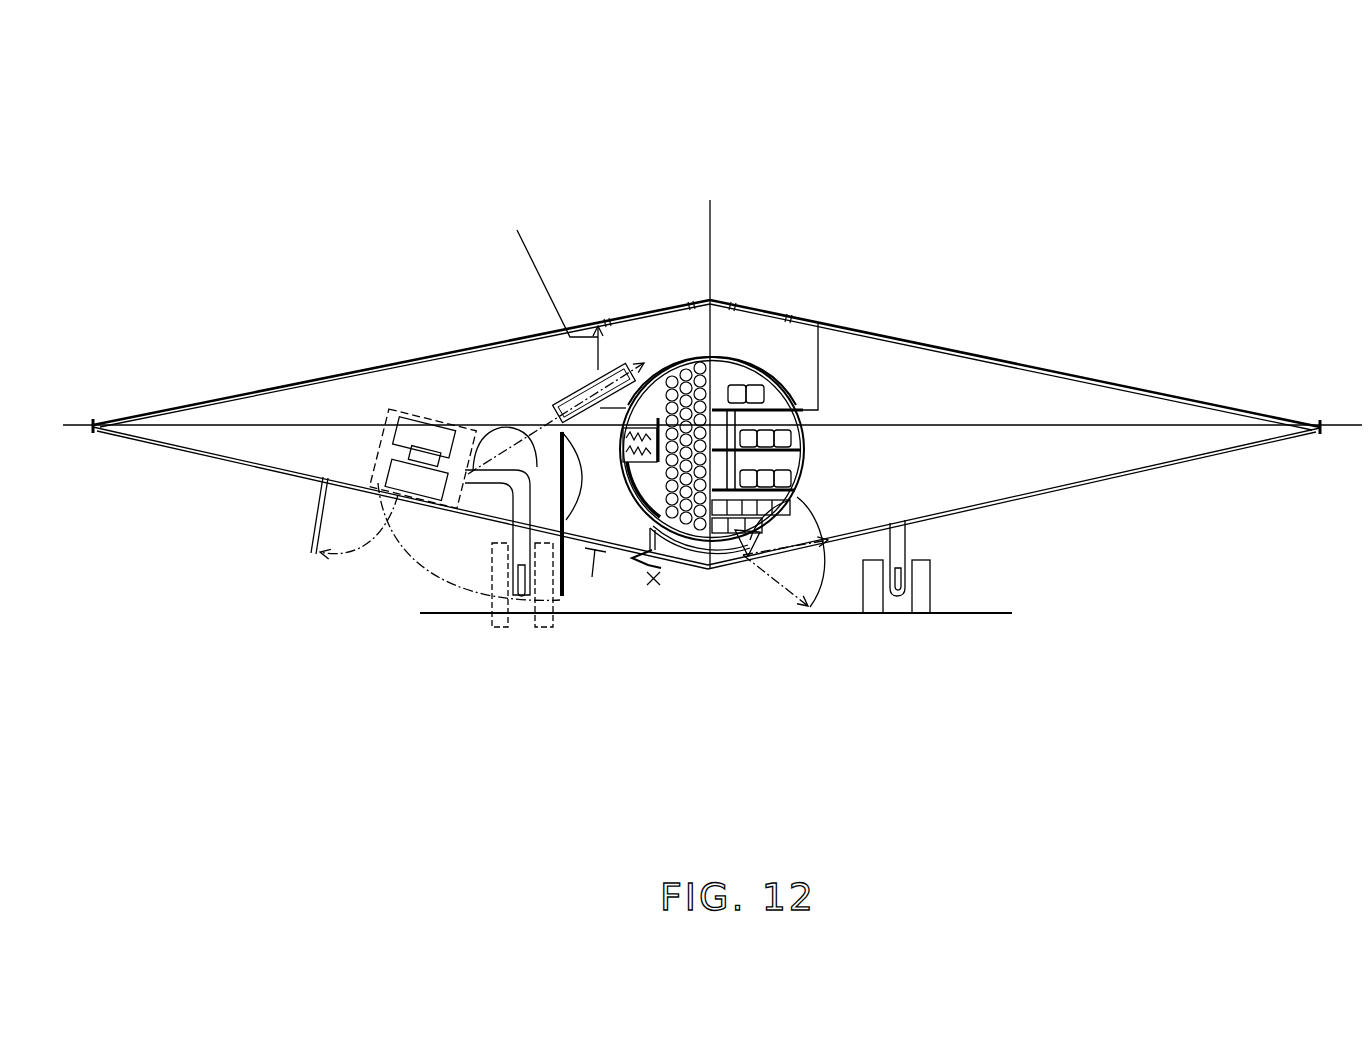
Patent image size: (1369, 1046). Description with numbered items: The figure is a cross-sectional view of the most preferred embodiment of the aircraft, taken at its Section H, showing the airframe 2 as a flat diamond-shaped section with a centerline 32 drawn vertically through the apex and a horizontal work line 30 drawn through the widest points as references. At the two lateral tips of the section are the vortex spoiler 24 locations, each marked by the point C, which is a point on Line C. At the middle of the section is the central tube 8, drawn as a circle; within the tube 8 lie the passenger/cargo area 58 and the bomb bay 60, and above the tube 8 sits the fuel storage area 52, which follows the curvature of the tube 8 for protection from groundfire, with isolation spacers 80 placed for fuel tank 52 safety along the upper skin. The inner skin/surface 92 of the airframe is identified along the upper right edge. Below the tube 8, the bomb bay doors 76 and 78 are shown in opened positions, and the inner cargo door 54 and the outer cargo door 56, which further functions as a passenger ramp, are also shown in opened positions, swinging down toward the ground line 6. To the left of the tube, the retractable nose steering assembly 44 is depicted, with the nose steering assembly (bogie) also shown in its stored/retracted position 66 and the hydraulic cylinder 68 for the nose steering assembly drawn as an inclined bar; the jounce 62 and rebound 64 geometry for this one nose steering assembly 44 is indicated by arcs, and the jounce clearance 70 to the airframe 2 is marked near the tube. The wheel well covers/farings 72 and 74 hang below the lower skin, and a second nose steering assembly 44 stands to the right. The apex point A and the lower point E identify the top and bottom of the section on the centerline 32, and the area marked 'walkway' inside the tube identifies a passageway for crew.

The airframe 2 is at (240, 128).
The ground surface 6 is at (998, 610).
The central tube 8 is at (808, 438).
The vortex spoiler 24 is at (95, 450).
The work line 30 is at (1179, 420).
The centerline 32 is at (716, 211).
The retractable nose steering assembly 44 is at (497, 583).
The fuel storage area 52 is at (799, 342).
The inner cargo door 54 is at (804, 501).
The outer cargo door 56 is at (786, 606).
The passenger/cargo area 58 is at (755, 361).
The bomb bay 60 is at (670, 360).
The jounce 62 is at (567, 624).
The rebound 64 is at (480, 555).
The stored/retracted position of nose steering assembly 66 is at (380, 406).
The hydraulic cylinder 68 is at (566, 394).
The jounce clearance 70 is at (600, 540).
The wheel well cover/faring 72 is at (308, 532).
The wheel well cover/faring 74 is at (575, 592).
The bomb bay door 76 is at (677, 591).
The bomb bay door 78 is at (654, 576).
The isolation spacer 80 is at (556, 299).
The inner skin/surface 92 is at (1068, 380).
The apex A is at (705, 295).
The point on Line C is at (99, 414).
The lower apex E is at (712, 572).